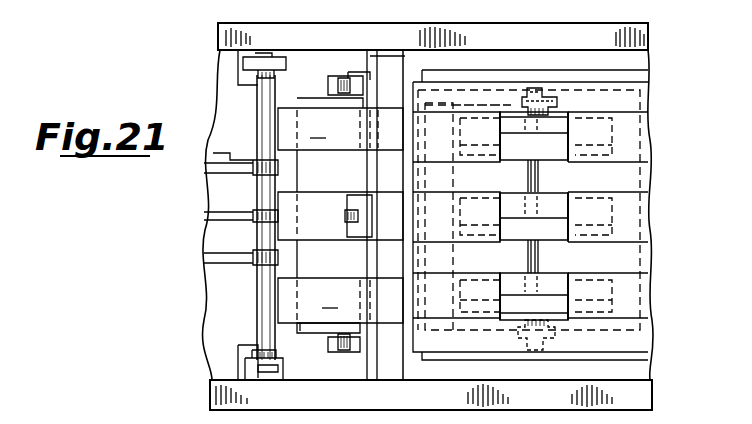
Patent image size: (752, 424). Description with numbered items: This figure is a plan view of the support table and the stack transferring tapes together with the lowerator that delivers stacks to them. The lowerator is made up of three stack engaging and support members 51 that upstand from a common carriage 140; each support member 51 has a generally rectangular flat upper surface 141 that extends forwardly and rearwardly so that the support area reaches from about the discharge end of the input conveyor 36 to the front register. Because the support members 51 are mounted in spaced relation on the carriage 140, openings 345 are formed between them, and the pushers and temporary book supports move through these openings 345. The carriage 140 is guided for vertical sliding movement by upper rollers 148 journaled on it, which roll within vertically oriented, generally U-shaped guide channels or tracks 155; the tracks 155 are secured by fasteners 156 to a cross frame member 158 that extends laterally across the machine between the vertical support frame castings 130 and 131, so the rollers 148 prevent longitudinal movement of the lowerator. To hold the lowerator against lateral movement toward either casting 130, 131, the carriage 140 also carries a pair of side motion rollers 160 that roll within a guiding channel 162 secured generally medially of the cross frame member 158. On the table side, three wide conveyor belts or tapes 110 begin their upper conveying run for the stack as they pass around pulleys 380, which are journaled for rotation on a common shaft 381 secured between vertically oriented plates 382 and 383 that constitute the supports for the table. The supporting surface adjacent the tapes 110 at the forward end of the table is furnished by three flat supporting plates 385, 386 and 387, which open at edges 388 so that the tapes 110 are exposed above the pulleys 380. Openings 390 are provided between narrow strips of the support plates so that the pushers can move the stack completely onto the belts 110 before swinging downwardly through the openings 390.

The input conveyor 36 is at (257, 258).
The stack engaging and support member 51 is at (340, 215).
The conveyor belt 110 is at (627, 135).
The vertical support frame casting 130 is at (630, 400).
The vertical support frame casting 131 is at (468, 44).
The carriage 140 is at (305, 333).
The upper surface 141 is at (299, 200).
The upper roller 148 is at (330, 80).
The guide channel 155 is at (346, 78).
The fastener 156 is at (368, 82).
The cross frame member 158 is at (377, 358).
The side motion roller 160 is at (345, 214).
The guiding channel 162 is at (374, 222).
The opening 345 is at (280, 180).
The pulley 380 is at (552, 127).
The common shaft 381 is at (538, 178).
The vertically oriented plate 382 is at (538, 87).
The vertically oriented plate 383 is at (540, 355).
The flat supporting plate 385 is at (467, 160).
The flat supporting plate 386 is at (480, 242).
The flat supporting plate 387 is at (455, 277).
The edge 388 is at (508, 308).
The opening 390 is at (648, 182).